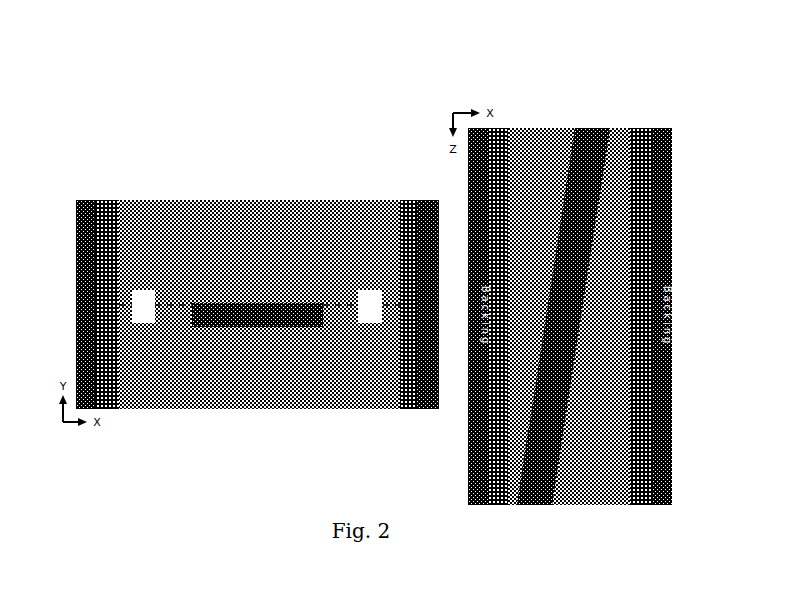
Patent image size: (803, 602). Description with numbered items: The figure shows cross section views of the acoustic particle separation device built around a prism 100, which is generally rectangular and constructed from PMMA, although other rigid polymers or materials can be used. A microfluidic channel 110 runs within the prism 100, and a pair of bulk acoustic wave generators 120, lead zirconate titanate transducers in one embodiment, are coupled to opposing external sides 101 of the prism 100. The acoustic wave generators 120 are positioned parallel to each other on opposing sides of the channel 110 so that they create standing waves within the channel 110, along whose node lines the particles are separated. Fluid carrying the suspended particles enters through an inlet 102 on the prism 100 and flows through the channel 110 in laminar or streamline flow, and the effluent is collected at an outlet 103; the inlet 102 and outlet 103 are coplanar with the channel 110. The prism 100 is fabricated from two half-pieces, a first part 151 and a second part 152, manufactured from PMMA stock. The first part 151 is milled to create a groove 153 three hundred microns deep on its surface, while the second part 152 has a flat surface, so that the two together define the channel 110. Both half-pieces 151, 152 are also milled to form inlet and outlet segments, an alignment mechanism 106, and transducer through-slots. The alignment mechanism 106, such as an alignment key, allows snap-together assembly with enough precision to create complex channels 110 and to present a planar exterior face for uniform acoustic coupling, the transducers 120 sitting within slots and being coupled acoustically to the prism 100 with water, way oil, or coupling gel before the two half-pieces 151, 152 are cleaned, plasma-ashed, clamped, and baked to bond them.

The prism 100 is at (150, 172).
The external sides 101 is at (120, 410).
The inlet 102 is at (532, 505).
The outlet 103 is at (591, 145).
The alignment mechanism 106 is at (151, 291).
The microfluidic channel 110 is at (583, 233).
The bulk acoustic wave generators 120 is at (108, 205).
The first part 151 is at (285, 395).
The second part 152 is at (331, 214).
The groove 153 is at (215, 327).